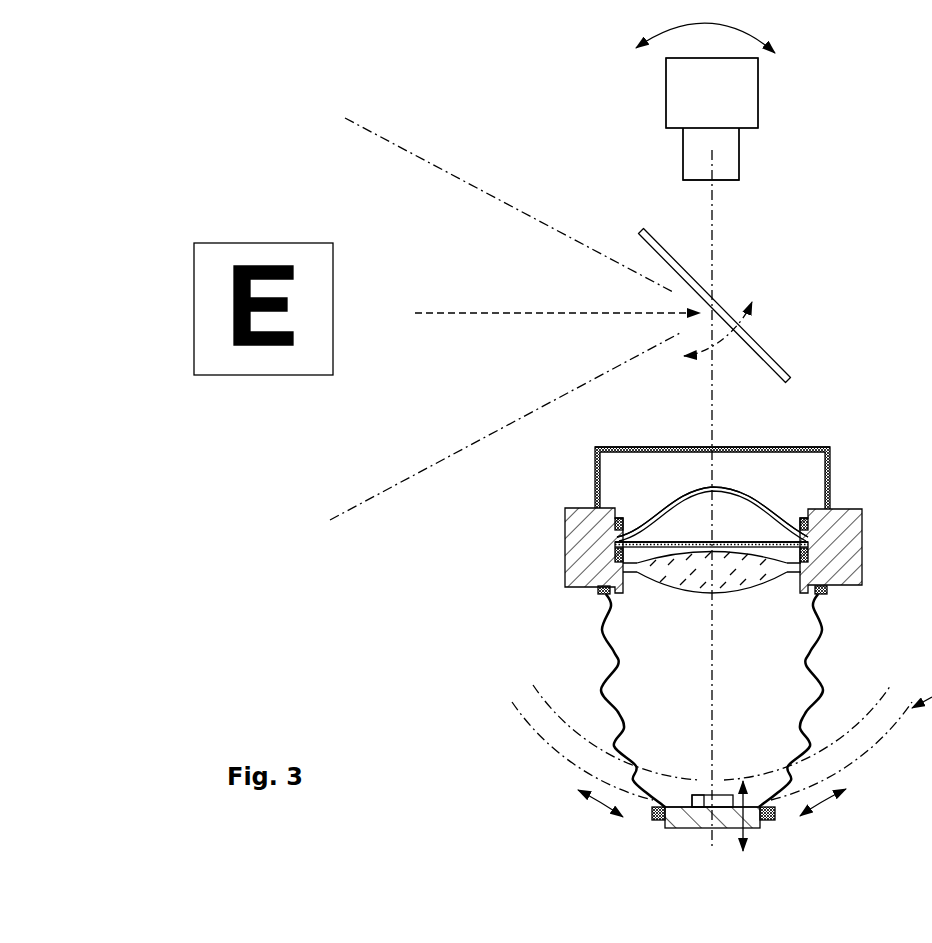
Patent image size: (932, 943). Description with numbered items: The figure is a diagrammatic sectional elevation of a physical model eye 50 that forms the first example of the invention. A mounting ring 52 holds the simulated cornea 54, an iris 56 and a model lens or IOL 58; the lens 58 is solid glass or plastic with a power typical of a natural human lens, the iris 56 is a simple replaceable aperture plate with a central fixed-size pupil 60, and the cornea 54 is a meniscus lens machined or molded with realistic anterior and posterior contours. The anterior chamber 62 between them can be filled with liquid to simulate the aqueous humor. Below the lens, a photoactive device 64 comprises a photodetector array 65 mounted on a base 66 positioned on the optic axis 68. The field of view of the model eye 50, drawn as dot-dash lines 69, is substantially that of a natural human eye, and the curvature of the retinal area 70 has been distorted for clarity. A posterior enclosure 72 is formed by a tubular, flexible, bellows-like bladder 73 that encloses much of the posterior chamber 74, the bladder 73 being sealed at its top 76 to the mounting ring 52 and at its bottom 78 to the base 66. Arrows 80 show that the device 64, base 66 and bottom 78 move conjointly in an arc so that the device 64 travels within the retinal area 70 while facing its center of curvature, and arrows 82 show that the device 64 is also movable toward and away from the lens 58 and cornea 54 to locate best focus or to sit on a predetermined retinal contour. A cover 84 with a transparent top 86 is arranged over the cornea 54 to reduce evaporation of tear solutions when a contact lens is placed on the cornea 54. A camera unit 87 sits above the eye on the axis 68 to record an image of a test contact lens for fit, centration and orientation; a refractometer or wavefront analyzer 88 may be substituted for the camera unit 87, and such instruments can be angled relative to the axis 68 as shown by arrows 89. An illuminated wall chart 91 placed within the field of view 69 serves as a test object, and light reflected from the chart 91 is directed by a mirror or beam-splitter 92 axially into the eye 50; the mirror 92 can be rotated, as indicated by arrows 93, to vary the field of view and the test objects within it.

The physical model eye 50 is at (362, 602).
The mounting ring 52 is at (577, 538).
The simulated cornea 54 is at (695, 497).
The iris 56 is at (758, 546).
The model lens or IOL 58 is at (723, 592).
The pupil 60 is at (706, 539).
The anterior chamber 62 is at (727, 517).
The photoactive device 64 is at (721, 789).
The photodetector array 65 is at (699, 795).
The base 66 is at (683, 828).
The optic axis 68 is at (713, 252).
The field of view 69 is at (462, 177).
The retinal area 70 is at (508, 705).
The posterior enclosure 72 is at (596, 635).
The bladder 73 is at (812, 657).
The posterior chamber 74 is at (676, 649).
The top of bladder 76 is at (832, 598).
The bottom of bladder 78 is at (774, 821).
The arrows 80 is at (708, 811).
The arrows 82 is at (759, 826).
The cover 84 is at (836, 470).
The transparent top 86 is at (667, 447).
The camera unit 87 is at (746, 99).
The refractometer or wavefront analyzer 88 is at (712, 119).
The arrows 89 is at (657, 37).
The illuminated wall chart 91 is at (281, 253).
The mirror or beam-splitter 92 is at (640, 236).
The arrows 93 is at (739, 317).